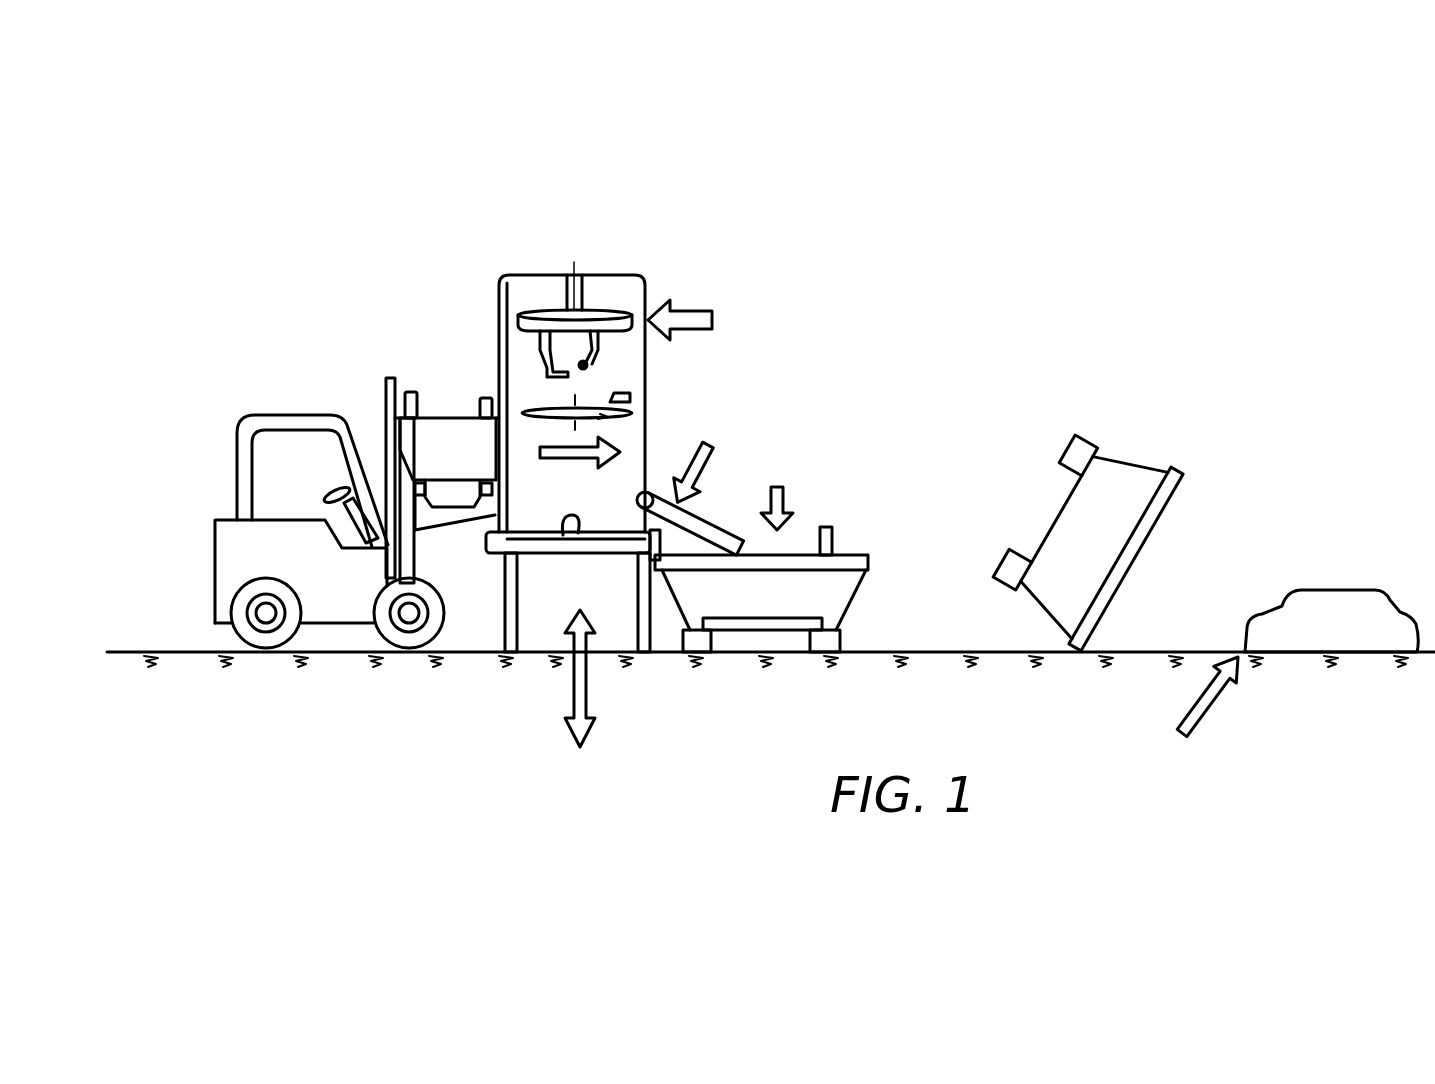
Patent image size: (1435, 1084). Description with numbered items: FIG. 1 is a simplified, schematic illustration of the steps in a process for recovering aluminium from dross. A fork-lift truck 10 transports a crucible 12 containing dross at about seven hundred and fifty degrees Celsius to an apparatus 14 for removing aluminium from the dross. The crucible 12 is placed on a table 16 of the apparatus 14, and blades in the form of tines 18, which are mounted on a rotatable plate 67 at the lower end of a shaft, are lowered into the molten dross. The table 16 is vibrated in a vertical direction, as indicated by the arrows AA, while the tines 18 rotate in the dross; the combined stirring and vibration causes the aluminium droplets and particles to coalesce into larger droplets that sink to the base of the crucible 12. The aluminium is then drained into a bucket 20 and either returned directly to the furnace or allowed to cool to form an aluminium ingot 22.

The fork-lift truck 10 is at (334, 660).
The crucible 12 is at (447, 432).
The apparatus 14 is at (601, 268).
The table 16 is at (572, 516).
The tines 18 is at (597, 357).
The rotatable plate 67 is at (632, 311).
The bucket 20 is at (750, 607).
The aluminium ingot 22 is at (1355, 615).